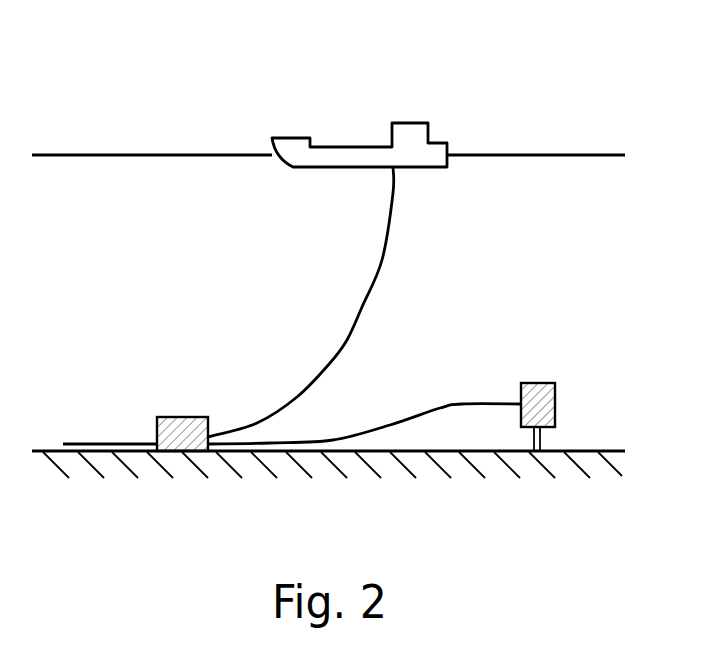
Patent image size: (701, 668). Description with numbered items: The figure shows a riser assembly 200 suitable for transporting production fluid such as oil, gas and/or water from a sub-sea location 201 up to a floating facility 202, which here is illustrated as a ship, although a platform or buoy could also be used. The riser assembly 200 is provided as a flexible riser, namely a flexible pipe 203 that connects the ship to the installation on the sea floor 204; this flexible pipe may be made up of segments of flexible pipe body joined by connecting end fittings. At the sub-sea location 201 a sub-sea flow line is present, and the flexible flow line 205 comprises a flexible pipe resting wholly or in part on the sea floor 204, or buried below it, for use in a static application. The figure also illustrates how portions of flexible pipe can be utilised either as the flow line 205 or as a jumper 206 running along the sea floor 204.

The riser assembly 200 is at (417, 265).
The sub-sea location 201 is at (187, 416).
The floating facility 202 is at (293, 136).
The flexible pipe 203 is at (362, 307).
The sea floor 204 is at (590, 450).
The flexible flow line 205 is at (107, 443).
The jumper 206 is at (462, 404).